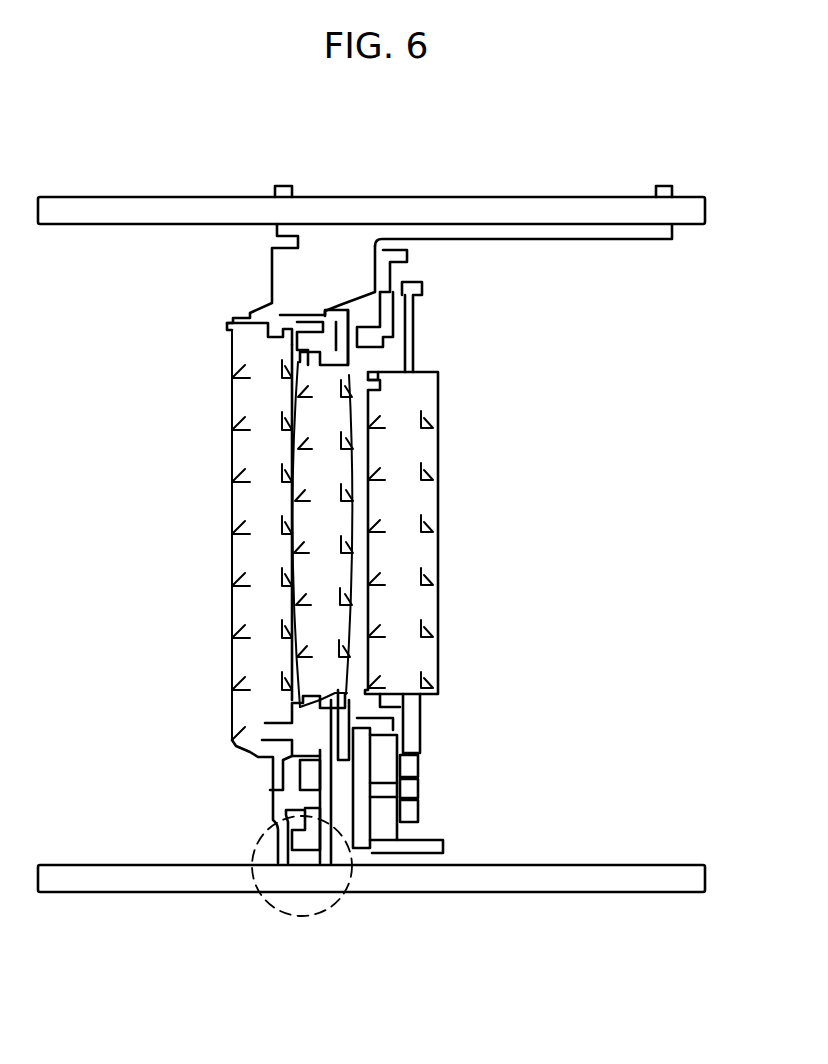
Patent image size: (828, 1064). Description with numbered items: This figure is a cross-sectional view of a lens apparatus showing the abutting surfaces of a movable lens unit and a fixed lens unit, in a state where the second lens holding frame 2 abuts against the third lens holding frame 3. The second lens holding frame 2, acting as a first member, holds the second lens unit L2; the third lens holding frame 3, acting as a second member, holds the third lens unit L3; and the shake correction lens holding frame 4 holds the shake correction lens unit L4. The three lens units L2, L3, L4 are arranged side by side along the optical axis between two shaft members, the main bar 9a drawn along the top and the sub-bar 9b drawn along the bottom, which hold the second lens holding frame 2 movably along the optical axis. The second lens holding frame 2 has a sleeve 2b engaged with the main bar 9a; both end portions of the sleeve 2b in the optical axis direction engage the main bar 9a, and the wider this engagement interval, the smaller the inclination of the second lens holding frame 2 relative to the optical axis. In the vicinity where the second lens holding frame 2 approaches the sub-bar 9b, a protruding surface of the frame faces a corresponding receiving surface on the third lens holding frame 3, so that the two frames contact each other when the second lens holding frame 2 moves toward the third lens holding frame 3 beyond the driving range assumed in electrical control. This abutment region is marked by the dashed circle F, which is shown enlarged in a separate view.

The second lens holding frame 2 is at (282, 277).
The sleeve 2b is at (457, 237).
The third lens holding frame 3 is at (338, 364).
The shake correction lens holding frame 4 is at (390, 300).
The main bar 9a is at (688, 215).
The sub-bar 9b is at (530, 880).
The second lens unit L2 is at (257, 608).
The third lens unit L3 is at (335, 468).
The shake correction lens unit L4 is at (400, 566).
The portion F is at (262, 840).